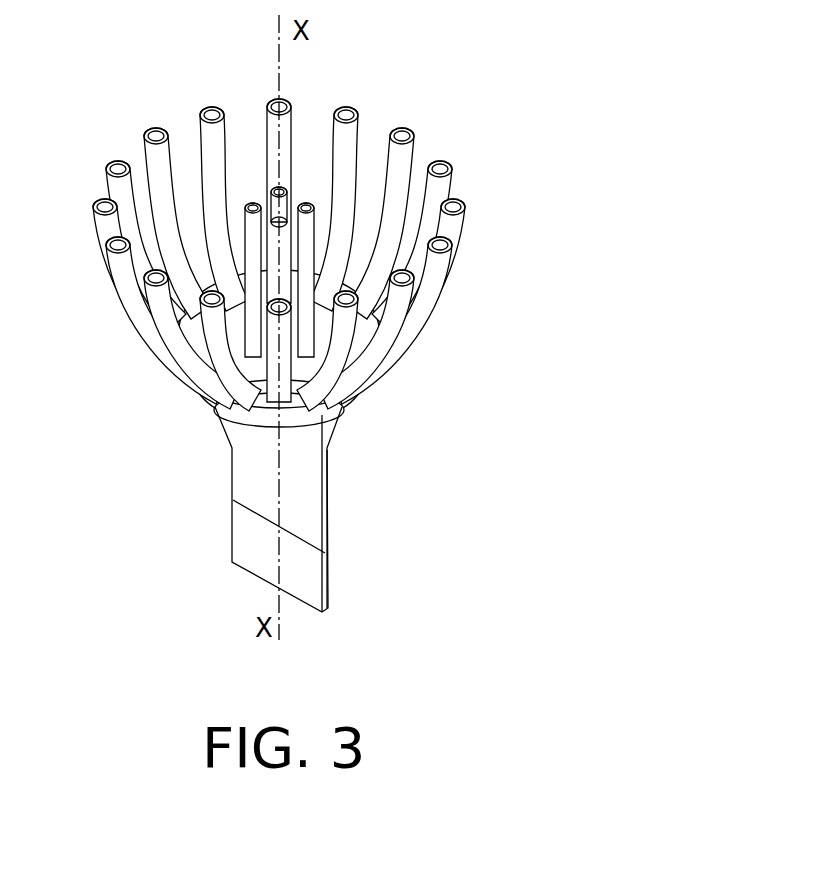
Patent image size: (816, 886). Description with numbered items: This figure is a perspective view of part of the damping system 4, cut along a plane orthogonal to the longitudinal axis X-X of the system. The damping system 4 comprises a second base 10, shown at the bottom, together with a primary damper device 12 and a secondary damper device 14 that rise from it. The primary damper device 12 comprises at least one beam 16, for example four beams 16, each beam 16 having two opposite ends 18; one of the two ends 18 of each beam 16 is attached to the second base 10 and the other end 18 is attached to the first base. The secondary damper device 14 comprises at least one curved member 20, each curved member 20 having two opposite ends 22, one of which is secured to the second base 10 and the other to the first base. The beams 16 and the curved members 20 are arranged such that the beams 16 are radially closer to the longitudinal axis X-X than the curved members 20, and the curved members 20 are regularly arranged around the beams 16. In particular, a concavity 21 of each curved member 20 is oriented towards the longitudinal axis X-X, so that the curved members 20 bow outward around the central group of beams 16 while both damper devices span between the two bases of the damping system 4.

The damping system 4 is at (532, 140).
The second base 10 is at (247, 492).
The primary damper device 12 is at (330, 250).
The secondary damper device 14 is at (507, 243).
The beam 16 is at (237, 222).
The ends 18 is at (317, 363).
The curved member 20 is at (326, 260).
The concavity 21 is at (427, 280).
The ends 22 is at (303, 400).